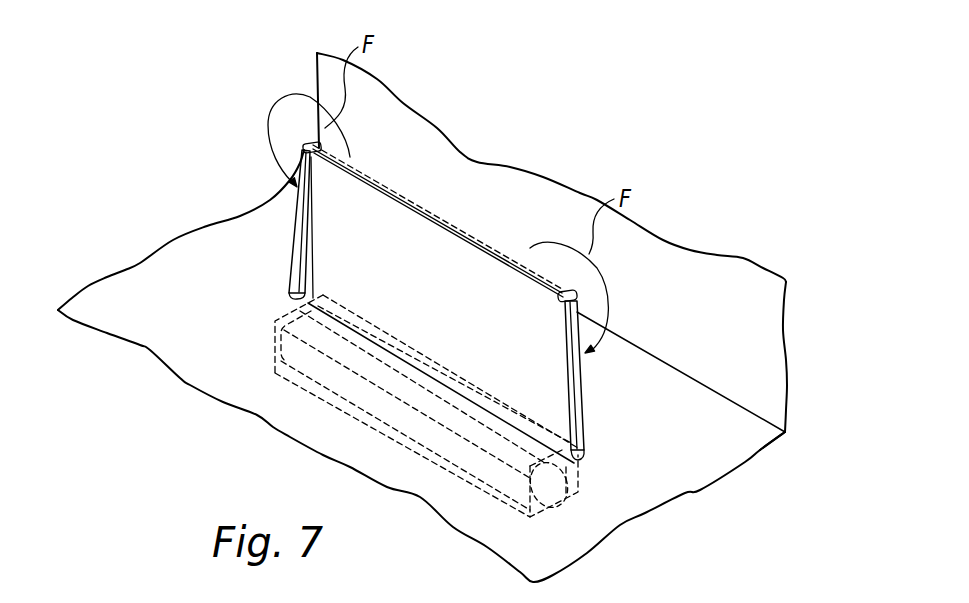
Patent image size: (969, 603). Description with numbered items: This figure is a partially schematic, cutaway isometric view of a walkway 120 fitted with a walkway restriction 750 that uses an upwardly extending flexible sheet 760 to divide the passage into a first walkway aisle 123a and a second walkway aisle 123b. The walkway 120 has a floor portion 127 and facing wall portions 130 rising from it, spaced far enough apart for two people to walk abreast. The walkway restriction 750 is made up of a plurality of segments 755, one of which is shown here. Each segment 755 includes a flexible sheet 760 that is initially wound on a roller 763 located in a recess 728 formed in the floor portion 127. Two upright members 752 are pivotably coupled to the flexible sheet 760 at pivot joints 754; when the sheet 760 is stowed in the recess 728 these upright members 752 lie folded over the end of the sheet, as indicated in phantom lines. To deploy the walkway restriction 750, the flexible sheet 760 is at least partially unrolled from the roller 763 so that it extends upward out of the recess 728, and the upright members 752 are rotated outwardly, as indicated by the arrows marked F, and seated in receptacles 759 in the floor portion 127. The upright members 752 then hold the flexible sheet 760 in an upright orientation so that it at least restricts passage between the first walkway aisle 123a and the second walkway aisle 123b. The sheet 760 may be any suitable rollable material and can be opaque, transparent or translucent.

The walkway 120 is at (722, 211).
The first walkway aisle 123a is at (125, 289).
The second walkway aisle 123b is at (743, 431).
The floor portion 127 is at (701, 460).
The wall portion 130 is at (763, 352).
The recess 728 is at (306, 301).
The walkway restriction 750 is at (409, 259).
The upright member 752 is at (297, 210).
The pivot joint 754 is at (313, 143).
The segment 755 is at (511, 236).
The receptacle 759 is at (290, 293).
The flexible sheet 760 is at (538, 320).
The roller 763 is at (566, 497).